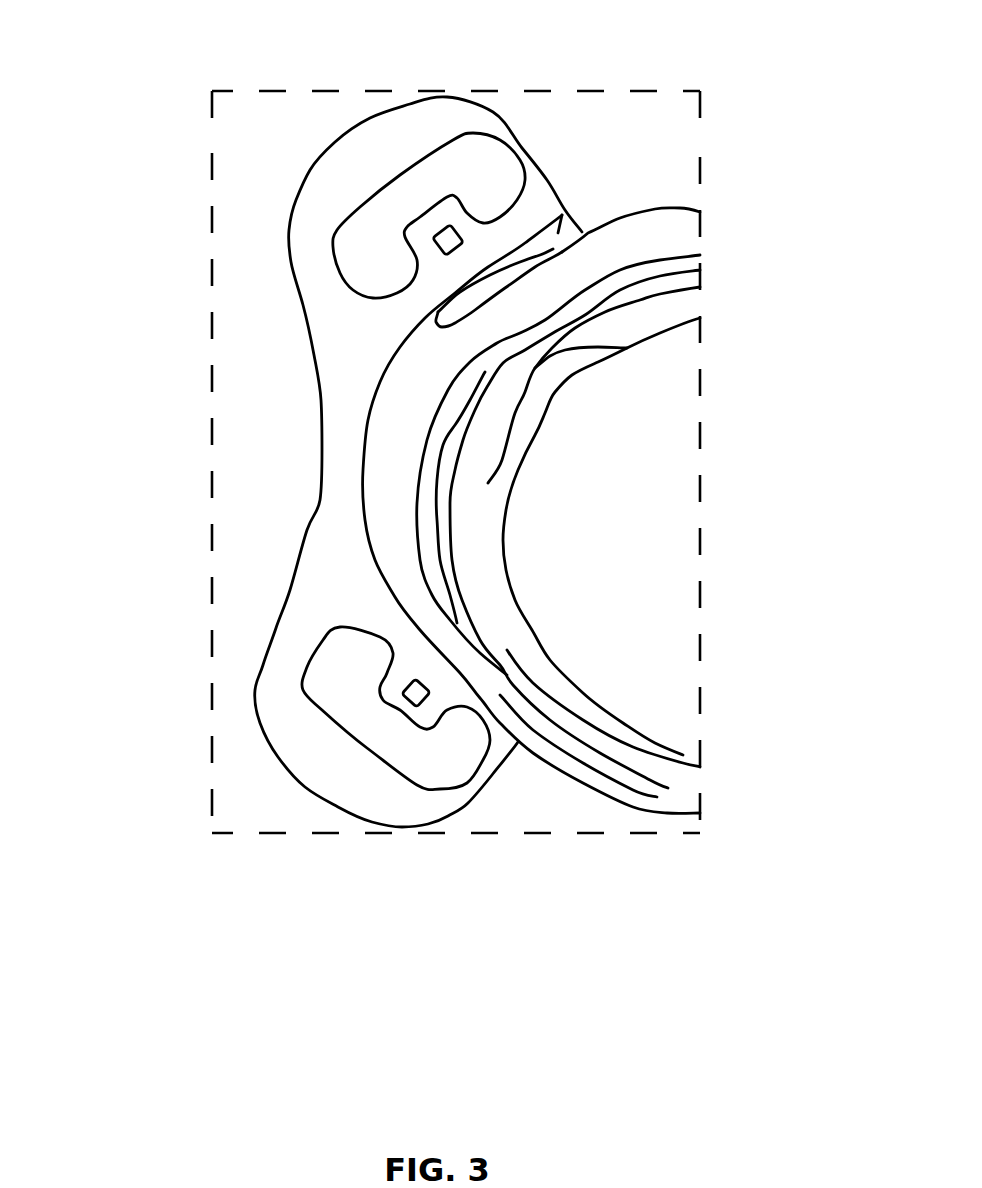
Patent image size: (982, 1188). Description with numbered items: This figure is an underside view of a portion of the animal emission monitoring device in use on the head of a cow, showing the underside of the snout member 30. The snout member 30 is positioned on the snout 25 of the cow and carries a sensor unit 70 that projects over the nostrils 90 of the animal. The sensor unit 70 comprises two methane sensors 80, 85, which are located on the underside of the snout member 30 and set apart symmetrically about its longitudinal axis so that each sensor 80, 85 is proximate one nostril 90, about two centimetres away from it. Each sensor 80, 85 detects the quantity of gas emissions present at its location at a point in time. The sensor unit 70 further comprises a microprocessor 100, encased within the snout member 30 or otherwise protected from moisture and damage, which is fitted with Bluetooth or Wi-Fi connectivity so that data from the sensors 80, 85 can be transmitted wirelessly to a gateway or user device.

The snout 25 is at (640, 625).
The snout member 30 is at (558, 232).
The sensor unit 70 is at (347, 110).
The methane sensor 80 is at (447, 246).
The methane sensor 85 is at (413, 697).
The nostrils 90 is at (460, 670).
The microprocessor 100 is at (482, 163).